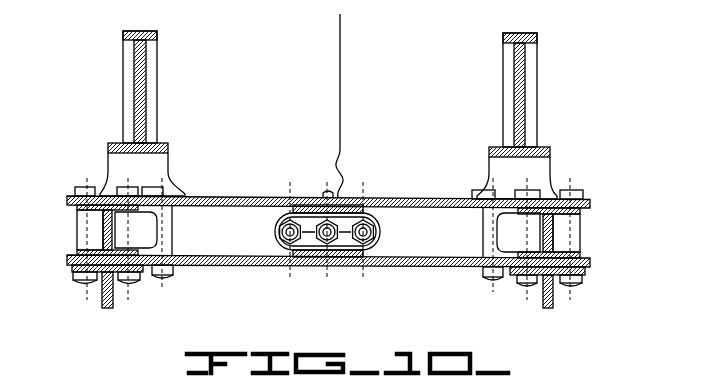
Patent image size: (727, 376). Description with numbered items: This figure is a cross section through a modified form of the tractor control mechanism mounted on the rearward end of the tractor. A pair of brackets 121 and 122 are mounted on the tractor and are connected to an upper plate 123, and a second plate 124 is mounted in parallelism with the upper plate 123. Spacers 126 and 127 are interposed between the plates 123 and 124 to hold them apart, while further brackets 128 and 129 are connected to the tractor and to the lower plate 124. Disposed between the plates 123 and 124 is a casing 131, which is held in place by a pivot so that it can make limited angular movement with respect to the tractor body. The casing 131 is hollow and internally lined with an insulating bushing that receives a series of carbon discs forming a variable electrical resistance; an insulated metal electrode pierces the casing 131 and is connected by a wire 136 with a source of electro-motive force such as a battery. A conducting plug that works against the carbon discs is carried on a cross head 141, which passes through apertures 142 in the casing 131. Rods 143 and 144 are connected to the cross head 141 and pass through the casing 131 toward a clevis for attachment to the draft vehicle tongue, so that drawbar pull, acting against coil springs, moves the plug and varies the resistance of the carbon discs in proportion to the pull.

The bracket 121 is at (128, 104).
The bracket 122 is at (530, 110).
The upper plate 123 is at (228, 191).
The plate 124 is at (228, 266).
The spacer 126 is at (100, 229).
The spacer 127 is at (557, 232).
The bracket 128 is at (101, 307).
The bracket 129 is at (553, 308).
The casing 131 is at (381, 202).
The wire 136 is at (340, 62).
The cross head 141 is at (375, 232).
The apertures 142 is at (352, 253).
The rod 143 is at (281, 234).
The rod 144 is at (367, 231).